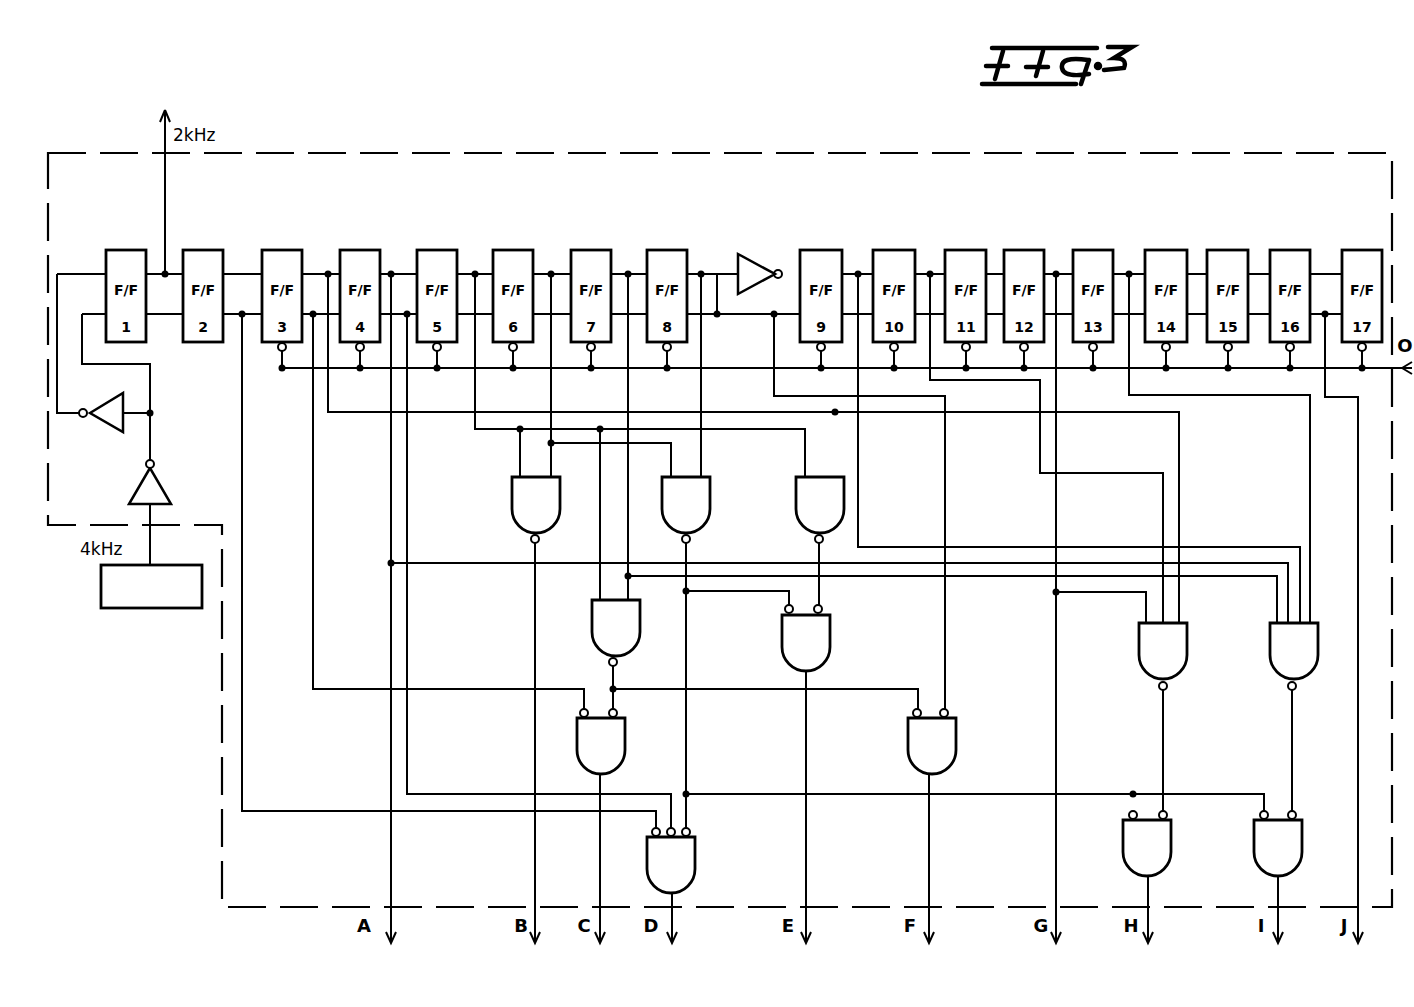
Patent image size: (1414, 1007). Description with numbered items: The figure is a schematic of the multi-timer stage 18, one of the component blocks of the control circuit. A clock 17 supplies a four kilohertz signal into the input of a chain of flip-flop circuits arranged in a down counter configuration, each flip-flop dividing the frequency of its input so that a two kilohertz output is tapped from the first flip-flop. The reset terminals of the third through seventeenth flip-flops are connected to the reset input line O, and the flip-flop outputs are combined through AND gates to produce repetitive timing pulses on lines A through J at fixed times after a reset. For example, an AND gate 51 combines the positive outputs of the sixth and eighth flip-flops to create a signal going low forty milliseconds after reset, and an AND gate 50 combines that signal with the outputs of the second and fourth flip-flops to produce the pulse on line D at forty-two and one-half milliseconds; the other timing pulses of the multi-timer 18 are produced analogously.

The clock 17 is at (150, 608).
The multi-timer stage 18 is at (222, 748).
The AND gate 50 is at (692, 847).
The AND gate 51 is at (702, 490).